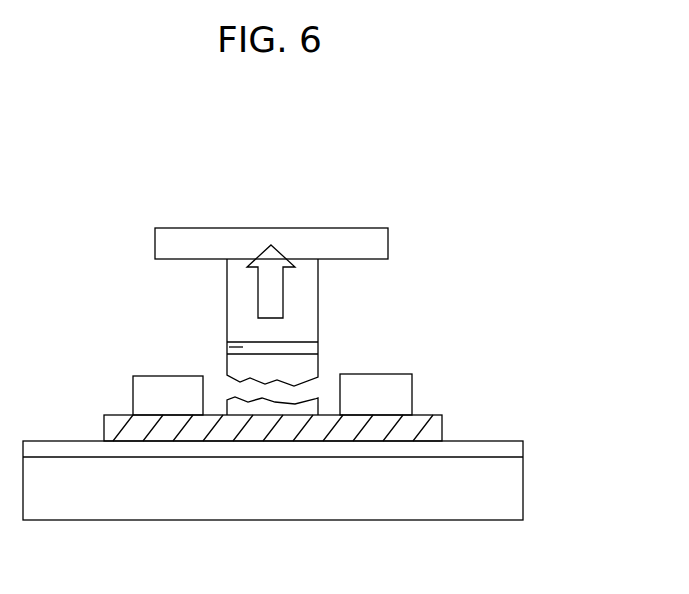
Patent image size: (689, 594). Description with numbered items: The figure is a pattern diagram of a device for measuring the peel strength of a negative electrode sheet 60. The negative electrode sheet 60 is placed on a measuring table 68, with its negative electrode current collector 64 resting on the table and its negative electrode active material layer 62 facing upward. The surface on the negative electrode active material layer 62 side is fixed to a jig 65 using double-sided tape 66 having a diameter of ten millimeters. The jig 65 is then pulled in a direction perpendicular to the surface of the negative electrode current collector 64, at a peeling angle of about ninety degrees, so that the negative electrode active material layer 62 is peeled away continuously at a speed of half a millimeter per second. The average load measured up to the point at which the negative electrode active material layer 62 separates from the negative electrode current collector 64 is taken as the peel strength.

The negative electrode sheet 60 is at (438, 367).
The negative electrode active material layer 62 is at (398, 380).
The negative electrode current collector 64 is at (445, 423).
The jig 65 is at (305, 298).
The double-sided tape 66 is at (222, 348).
The measuring table 68 is at (515, 483).